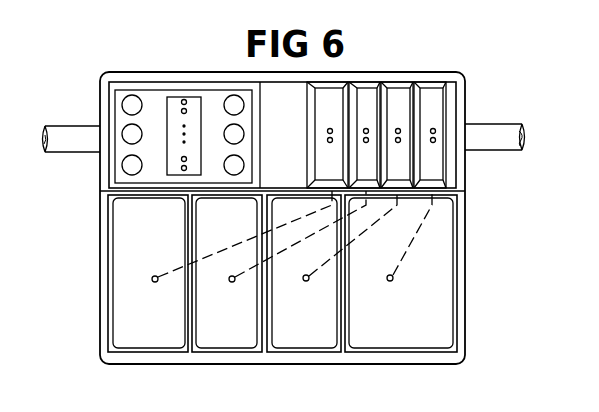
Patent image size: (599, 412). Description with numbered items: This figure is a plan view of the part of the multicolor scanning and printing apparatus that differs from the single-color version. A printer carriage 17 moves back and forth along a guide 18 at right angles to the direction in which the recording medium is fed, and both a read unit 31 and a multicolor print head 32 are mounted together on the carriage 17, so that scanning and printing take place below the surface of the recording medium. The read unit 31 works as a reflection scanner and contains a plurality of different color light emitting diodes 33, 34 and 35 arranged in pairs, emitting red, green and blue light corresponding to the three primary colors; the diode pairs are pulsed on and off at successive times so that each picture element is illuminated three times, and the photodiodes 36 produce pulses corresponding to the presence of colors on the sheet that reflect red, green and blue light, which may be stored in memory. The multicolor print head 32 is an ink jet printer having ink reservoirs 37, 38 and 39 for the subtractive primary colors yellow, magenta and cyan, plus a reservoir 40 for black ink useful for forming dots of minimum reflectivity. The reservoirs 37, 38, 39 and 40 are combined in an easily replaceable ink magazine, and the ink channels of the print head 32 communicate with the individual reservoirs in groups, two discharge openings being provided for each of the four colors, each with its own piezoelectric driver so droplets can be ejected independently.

The printer carriage 17 is at (465, 82).
The guide 18 is at (498, 147).
The read unit 31 is at (118, 92).
The multicolor print head 32 is at (437, 112).
The light emitting diode 33 is at (122, 106).
The light emitting diode 34 is at (122, 136).
The light emitting diode 35 is at (122, 167).
The photodiodes 36 is at (170, 98).
The ink reservoir 37 is at (153, 348).
The ink reservoir 38 is at (226, 336).
The ink reservoir 39 is at (305, 336).
The reservoir 40 is at (402, 337).